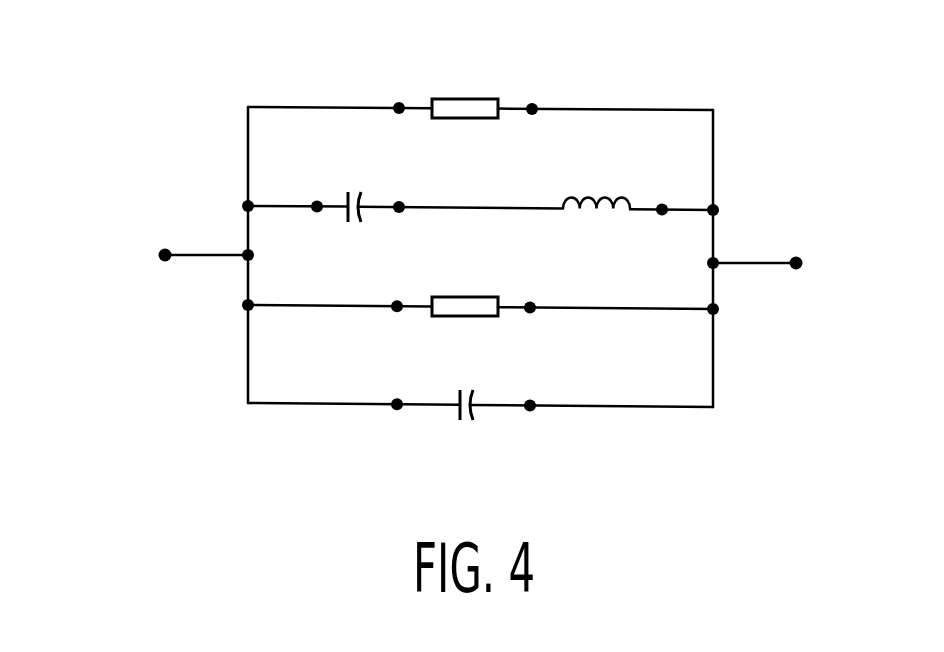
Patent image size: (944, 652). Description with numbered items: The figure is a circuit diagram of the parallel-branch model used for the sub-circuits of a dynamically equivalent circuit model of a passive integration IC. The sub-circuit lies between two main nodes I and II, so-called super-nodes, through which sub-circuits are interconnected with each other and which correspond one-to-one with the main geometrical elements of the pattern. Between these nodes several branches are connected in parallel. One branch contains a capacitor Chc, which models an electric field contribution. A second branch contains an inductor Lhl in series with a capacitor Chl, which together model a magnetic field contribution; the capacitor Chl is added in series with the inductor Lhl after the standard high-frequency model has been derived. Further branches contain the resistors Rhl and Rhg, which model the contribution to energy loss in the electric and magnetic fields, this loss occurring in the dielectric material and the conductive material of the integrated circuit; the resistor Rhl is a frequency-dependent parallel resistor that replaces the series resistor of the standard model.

The parallel resistor Rhl is at (465, 86).
The capacitor Chl is at (355, 184).
The inductor Lhl is at (596, 181).
The resistor Rhg is at (465, 282).
The capacitor Chc is at (465, 431).
The main node I is at (204, 281).
The main node II is at (759, 289).